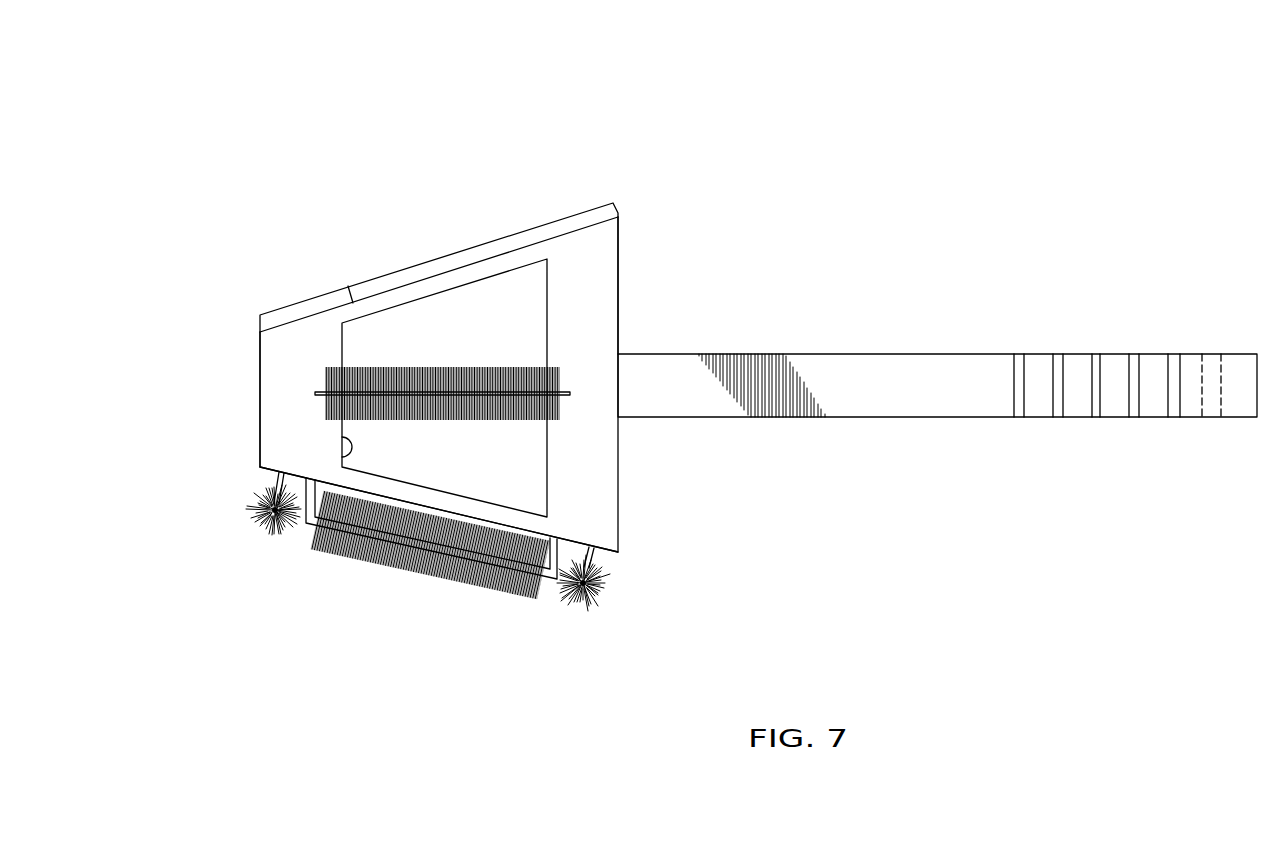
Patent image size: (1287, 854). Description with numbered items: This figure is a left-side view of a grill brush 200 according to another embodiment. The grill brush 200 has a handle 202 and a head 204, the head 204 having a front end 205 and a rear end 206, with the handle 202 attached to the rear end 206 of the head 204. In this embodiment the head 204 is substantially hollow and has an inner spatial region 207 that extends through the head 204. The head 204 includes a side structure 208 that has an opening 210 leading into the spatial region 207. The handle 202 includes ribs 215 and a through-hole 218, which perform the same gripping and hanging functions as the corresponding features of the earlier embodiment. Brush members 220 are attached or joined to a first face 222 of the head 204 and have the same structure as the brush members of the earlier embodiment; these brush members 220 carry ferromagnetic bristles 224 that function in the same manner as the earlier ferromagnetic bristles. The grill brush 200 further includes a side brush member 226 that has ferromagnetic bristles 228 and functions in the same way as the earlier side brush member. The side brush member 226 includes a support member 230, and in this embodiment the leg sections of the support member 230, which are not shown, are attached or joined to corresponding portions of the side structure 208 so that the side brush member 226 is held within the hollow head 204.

The grill brush 200 is at (672, 127).
The handle 202 is at (867, 353).
The head 204 is at (415, 222).
The front end 205 is at (258, 422).
The rear end 206 is at (618, 328).
The inner spatial region 207 is at (537, 320).
The side structure 208 is at (595, 255).
The opening 210 is at (340, 452).
The ribs 215 is at (1058, 412).
The through-hole 218 is at (1217, 365).
The brush members 220 is at (272, 527).
The first face 222 is at (608, 555).
The ferromagnetic bristles 224 is at (255, 508).
The side brush member 226 is at (500, 363).
The ferromagnetic bristles 228 is at (403, 420).
The support member 230 is at (565, 390).